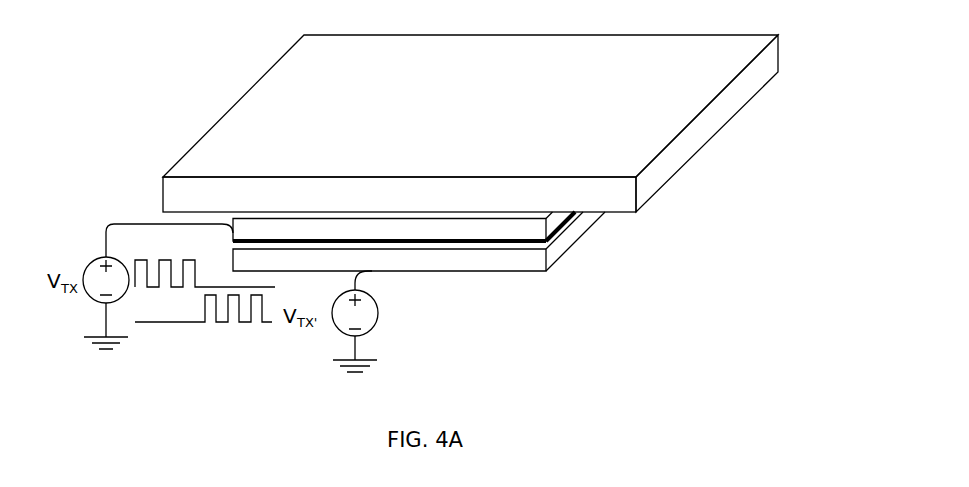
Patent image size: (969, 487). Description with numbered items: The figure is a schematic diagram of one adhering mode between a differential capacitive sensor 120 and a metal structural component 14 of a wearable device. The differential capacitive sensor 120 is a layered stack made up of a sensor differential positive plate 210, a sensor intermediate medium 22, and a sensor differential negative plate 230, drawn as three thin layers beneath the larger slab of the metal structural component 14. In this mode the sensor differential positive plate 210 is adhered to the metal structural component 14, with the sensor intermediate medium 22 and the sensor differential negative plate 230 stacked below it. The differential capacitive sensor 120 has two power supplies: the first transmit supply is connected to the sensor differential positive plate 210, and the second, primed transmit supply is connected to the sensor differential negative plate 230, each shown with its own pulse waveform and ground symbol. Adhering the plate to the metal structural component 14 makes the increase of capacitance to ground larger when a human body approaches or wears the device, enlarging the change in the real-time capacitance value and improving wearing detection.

The metal structural component 14 is at (697, 133).
The differential capacitive sensor 120 is at (518, 274).
The sensor differential positive plate 210 is at (553, 223).
The sensor intermediate medium 22 is at (573, 242).
The sensor differential negative plate 230 is at (546, 271).